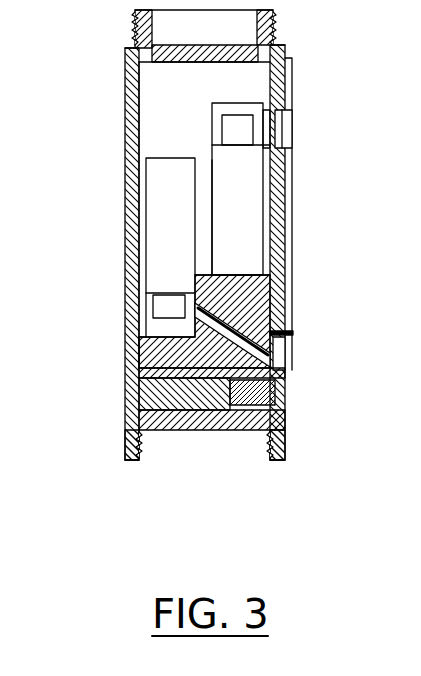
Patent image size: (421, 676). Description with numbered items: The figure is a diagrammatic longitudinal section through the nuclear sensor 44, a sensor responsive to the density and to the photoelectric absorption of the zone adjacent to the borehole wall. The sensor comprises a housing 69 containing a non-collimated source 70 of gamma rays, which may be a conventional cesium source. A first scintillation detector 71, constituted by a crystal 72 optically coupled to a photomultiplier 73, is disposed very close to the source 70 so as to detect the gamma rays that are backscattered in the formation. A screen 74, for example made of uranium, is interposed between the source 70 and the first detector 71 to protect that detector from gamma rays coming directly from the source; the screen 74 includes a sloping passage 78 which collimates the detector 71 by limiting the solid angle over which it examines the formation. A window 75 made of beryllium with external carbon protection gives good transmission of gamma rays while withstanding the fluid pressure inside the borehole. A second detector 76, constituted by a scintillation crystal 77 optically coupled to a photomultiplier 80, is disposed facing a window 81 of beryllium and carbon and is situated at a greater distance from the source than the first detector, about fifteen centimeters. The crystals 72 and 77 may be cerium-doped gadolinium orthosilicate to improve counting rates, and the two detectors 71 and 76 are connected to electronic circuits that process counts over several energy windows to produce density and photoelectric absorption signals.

The sensor 44 is at (116, 207).
The housing 69 is at (132, 66).
The non-collimated source 70 is at (285, 417).
The first scintillation detector 71 is at (140, 236).
The crystal 72 is at (163, 305).
The photomultiplier 73 is at (162, 173).
The screen 74 is at (255, 295).
The window 75 is at (290, 352).
The second detector 76 is at (270, 199).
The scintillation crystal 77 is at (243, 118).
The sloping passage 78 is at (272, 333).
The photomultiplier 80 is at (243, 235).
The window 81 is at (293, 125).